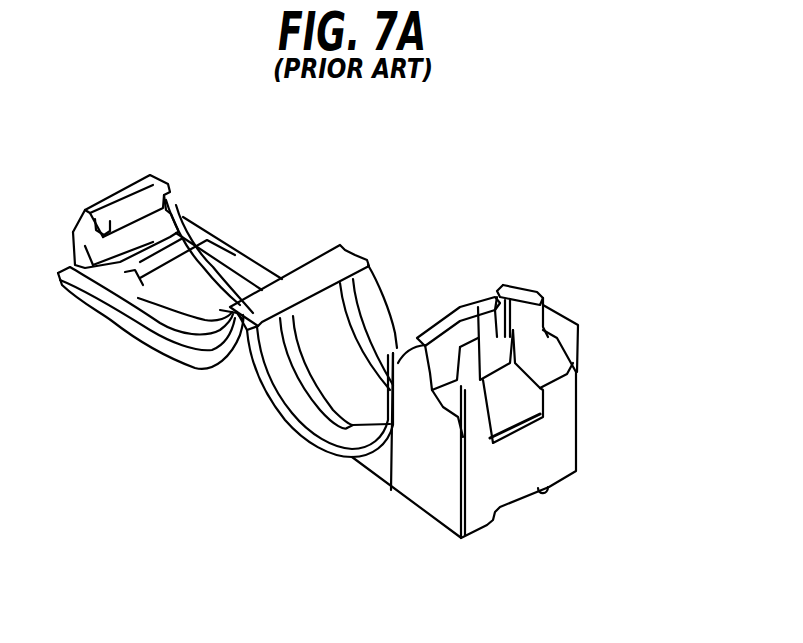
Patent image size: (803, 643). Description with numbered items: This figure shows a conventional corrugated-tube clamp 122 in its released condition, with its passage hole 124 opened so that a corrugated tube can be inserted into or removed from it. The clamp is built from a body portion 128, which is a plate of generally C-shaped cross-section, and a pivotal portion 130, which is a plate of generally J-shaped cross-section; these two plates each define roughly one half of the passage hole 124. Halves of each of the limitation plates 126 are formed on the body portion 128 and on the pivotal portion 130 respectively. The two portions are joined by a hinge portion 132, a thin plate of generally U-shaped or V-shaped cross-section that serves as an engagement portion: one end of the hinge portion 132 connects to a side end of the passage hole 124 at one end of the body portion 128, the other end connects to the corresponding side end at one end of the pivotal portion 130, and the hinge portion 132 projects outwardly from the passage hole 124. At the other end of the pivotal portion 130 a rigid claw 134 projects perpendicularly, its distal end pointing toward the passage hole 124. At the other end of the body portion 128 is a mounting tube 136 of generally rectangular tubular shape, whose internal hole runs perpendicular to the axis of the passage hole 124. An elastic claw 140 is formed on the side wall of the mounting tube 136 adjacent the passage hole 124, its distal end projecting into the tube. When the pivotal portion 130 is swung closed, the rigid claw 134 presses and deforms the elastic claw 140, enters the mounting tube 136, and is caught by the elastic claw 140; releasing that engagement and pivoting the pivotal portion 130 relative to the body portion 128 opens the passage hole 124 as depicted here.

The corrugated-tube clamp 122 is at (359, 194).
The passage hole 124 is at (167, 338).
The limitation plates 126 is at (232, 253).
The body portion 128 is at (303, 447).
The pivotal portion 130 is at (137, 345).
The hinge portion 132 is at (328, 270).
The rigid claw 134 is at (120, 190).
The mounting tube 136 is at (548, 333).
The elastic claw 140 is at (478, 320).